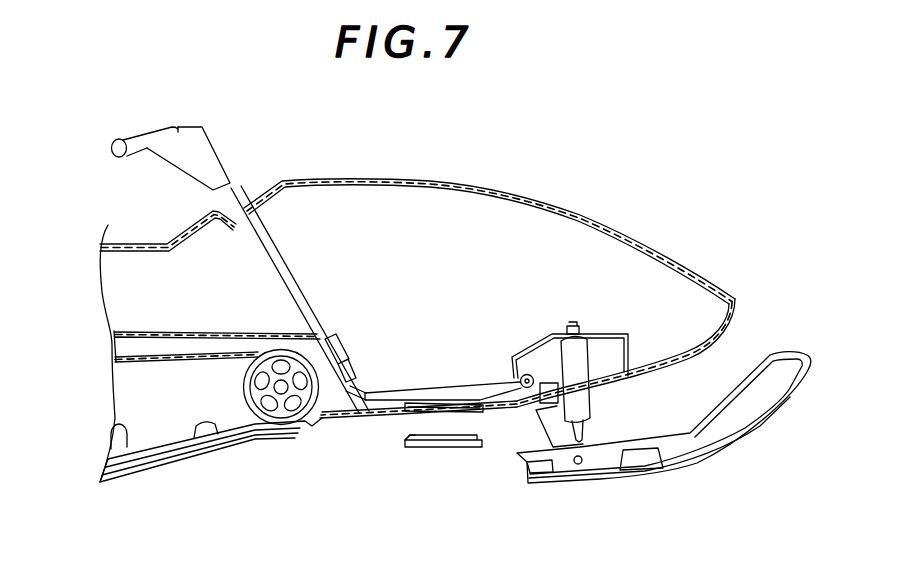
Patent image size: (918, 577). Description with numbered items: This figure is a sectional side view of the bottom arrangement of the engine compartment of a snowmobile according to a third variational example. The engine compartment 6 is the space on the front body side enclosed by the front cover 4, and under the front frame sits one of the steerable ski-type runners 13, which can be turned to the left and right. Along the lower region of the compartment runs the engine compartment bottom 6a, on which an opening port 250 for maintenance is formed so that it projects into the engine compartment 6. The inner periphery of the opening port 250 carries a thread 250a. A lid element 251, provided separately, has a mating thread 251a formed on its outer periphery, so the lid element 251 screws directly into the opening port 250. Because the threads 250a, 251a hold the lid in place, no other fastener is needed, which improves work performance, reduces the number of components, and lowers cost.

The front cover 4 is at (523, 194).
The engine compartment 6 is at (657, 271).
The engine compartment bottom 6a is at (400, 415).
The opening port 250 is at (450, 407).
The thread 250a is at (420, 387).
The lid element 251 is at (444, 448).
The thread 251a is at (403, 441).
The ski-type runner 13 is at (717, 451).